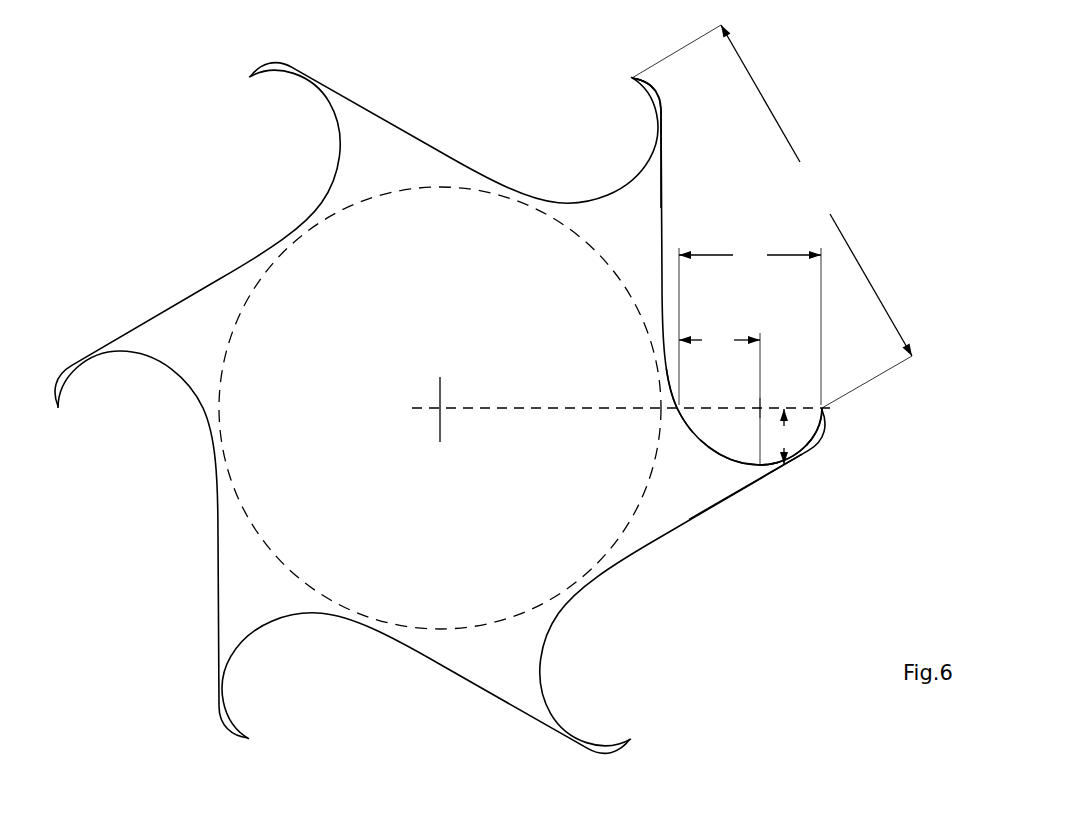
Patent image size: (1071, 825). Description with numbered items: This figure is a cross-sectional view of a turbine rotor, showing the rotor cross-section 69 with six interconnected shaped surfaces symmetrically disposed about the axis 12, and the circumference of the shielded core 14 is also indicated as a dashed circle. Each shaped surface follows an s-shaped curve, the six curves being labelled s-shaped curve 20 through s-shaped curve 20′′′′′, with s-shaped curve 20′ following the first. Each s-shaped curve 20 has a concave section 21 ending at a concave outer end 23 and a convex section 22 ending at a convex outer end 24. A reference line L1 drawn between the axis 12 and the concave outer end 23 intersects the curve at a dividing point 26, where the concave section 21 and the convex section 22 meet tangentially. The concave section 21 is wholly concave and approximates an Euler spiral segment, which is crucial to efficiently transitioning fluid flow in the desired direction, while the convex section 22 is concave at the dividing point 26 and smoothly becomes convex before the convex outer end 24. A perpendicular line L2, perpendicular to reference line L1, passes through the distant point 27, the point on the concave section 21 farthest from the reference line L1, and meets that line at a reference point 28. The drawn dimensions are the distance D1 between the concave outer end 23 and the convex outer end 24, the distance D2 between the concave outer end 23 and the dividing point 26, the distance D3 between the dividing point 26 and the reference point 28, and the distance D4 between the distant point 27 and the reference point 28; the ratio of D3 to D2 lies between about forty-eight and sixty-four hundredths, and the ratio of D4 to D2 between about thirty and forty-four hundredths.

The rotor cross-section 69 is at (458, 412).
The s-shaped curve 20 is at (738, 281).
The s-shaped curve 20′ is at (702, 588).
The s-shaped curve 20′′′′′ is at (465, 135).
The axis 12 is at (382, 428).
The shielded core 14 is at (715, 527).
The concave section 21 is at (678, 464).
The convex section 22 is at (687, 143).
The concave outer end 23 is at (858, 430).
The convex outer end 24 is at (610, 65).
The dividing point 26 is at (633, 408).
The distant point 27 is at (702, 480).
The reference point 28 is at (726, 397).
The reference line L1 is at (622, 373).
The perpendicular line L2 is at (726, 399).
The dimension D1 is at (772, 216).
The dimension D2 is at (750, 324).
The dimension D3 is at (719, 340).
The dimension D4 is at (784, 436).